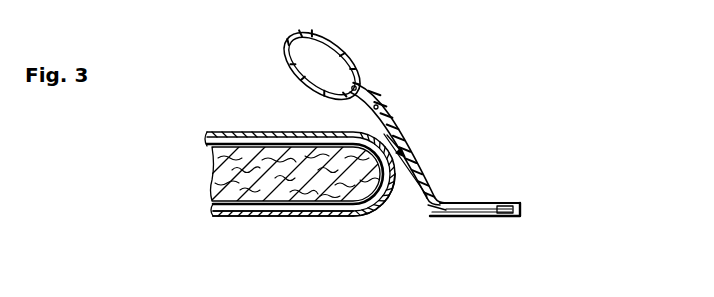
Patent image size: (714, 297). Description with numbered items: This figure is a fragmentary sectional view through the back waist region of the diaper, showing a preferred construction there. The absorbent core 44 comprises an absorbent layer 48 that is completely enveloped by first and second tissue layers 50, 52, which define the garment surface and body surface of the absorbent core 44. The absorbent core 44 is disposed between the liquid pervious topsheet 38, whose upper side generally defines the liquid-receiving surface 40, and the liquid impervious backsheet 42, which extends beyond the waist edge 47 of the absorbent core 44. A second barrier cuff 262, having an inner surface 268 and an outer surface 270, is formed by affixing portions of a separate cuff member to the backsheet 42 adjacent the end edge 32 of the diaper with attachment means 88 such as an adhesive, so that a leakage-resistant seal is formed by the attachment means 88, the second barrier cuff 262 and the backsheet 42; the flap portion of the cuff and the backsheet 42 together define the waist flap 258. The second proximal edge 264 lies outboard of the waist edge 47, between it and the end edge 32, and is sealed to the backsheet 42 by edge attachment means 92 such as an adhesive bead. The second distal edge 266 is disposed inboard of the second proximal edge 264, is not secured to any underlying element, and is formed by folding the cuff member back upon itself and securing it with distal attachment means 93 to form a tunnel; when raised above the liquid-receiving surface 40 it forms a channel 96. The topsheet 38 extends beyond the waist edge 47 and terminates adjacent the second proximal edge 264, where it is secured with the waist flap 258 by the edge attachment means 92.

The end edge 32 is at (521, 208).
The topsheet 38 is at (207, 133).
The liquid-receiving surface 40 is at (246, 133).
The backsheet 42 is at (232, 216).
The absorbent core 44 is at (188, 166).
The waist edge 47 is at (402, 205).
The absorbent layer 48 is at (220, 186).
The first tissue layer 50 is at (296, 137).
The second tissue layer 52 is at (292, 216).
The attachment means 88 is at (517, 215).
The edge attachment means 92 is at (444, 212).
The distal attachment means 93 is at (356, 84).
The channel 96 is at (384, 134).
The waist flap 258 is at (456, 212).
The second barrier cuff 262 is at (432, 121).
The second proximal edge 264 is at (442, 200).
The second distal edge 266 is at (286, 40).
The inner surface 268 is at (380, 104).
The outer surface 270 is at (422, 150).